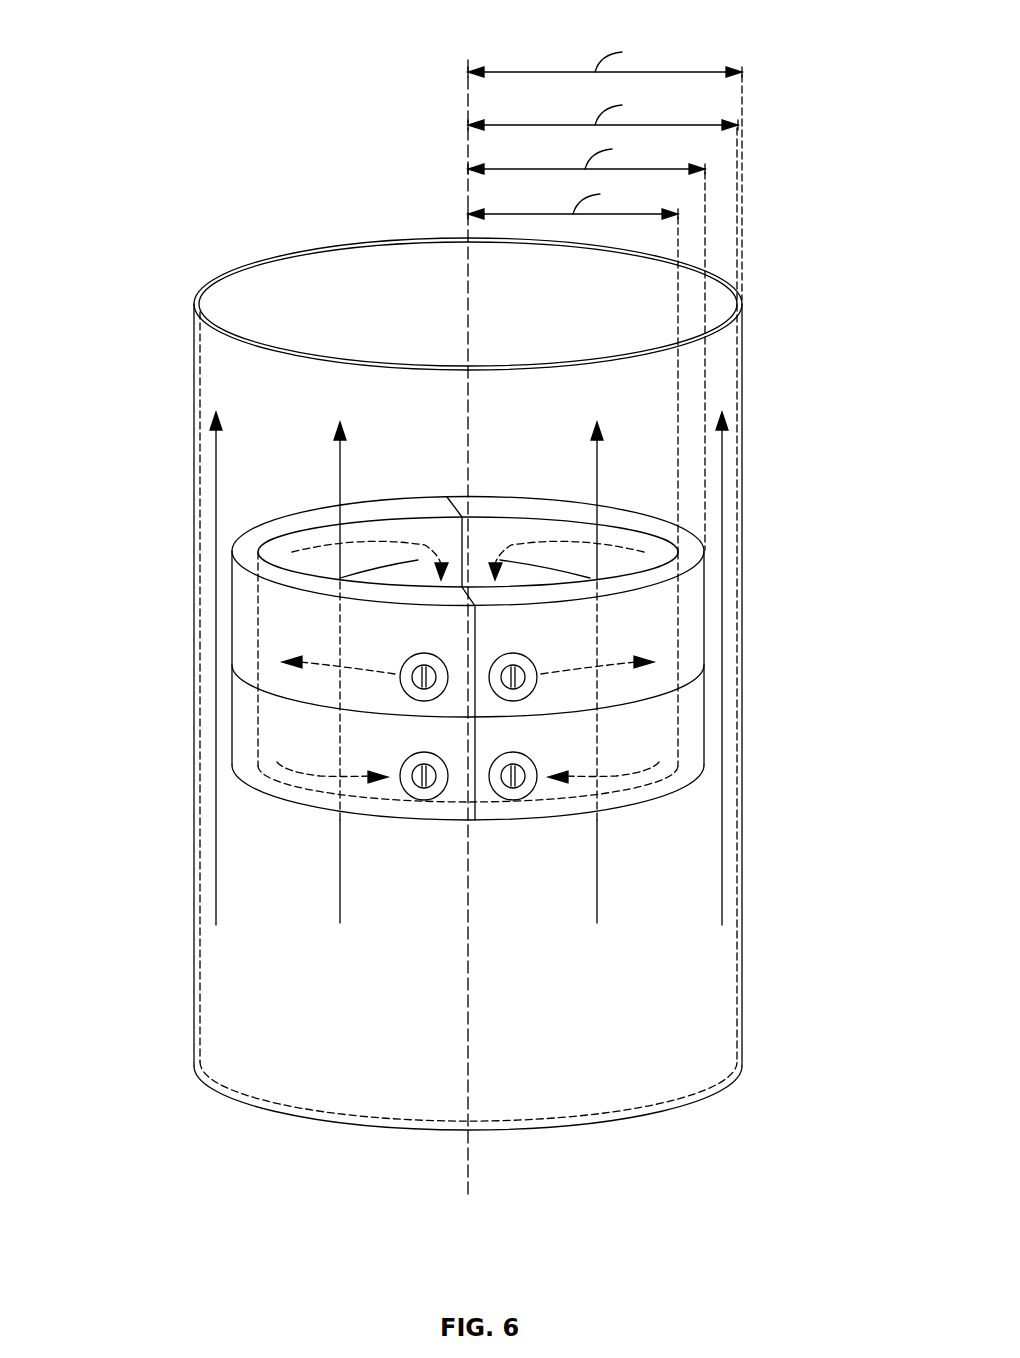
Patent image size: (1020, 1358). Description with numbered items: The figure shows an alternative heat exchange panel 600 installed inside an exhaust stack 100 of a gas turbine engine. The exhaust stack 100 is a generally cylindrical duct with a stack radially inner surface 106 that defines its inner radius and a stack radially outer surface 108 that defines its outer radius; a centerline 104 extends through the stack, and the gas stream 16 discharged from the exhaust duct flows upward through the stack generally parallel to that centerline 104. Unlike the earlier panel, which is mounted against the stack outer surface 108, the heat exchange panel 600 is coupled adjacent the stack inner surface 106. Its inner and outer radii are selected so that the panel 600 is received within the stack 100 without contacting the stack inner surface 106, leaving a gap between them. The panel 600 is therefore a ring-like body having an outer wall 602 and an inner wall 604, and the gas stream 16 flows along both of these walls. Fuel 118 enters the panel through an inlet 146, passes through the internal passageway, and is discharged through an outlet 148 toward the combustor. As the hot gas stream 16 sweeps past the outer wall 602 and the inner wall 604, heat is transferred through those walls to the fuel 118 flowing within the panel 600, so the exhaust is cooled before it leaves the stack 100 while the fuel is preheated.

The exhaust stack 100 is at (140, 42).
The centerline 104 is at (467, 298).
The stack radially inner surface 106 is at (200, 933).
The stack radially outer surface 108 is at (192, 985).
The gas stream 16 is at (217, 848).
The fuel 118 is at (398, 525).
The inlet 146 is at (513, 700).
The outlet 148 is at (505, 785).
The heat exchange panel 600 is at (242, 752).
The outer wall 602 is at (305, 507).
The inner wall 604 is at (628, 528).